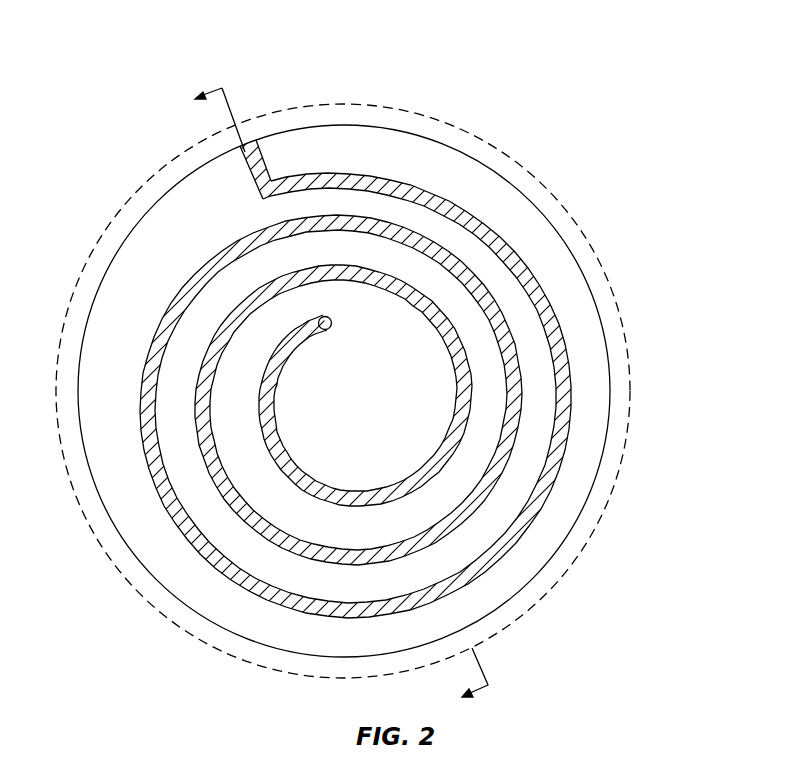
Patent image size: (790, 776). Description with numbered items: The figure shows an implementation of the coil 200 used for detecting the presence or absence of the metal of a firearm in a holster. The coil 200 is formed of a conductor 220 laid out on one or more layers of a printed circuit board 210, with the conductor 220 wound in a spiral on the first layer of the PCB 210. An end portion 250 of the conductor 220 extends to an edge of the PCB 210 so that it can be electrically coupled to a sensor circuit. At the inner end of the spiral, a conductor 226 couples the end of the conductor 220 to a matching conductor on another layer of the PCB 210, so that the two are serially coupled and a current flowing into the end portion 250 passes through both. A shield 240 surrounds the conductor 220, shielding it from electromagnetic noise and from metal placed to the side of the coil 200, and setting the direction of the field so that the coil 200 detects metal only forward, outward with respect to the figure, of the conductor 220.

The coil 200 is at (103, 104).
The printed circuit board 210 is at (507, 173).
The conductor 220 is at (537, 291).
The conductor 226 is at (333, 323).
The shield 240 is at (628, 353).
The end portion 250 is at (263, 160).